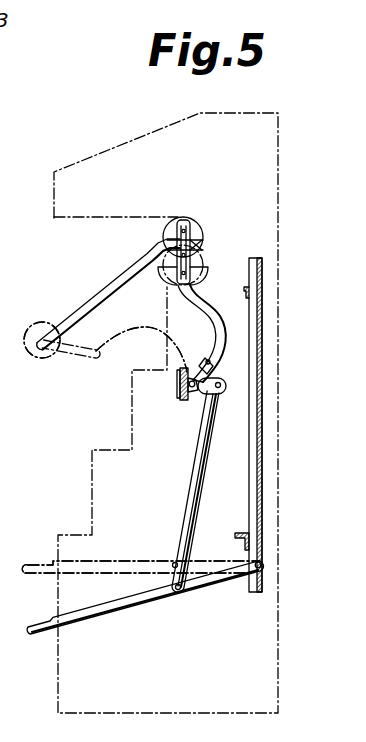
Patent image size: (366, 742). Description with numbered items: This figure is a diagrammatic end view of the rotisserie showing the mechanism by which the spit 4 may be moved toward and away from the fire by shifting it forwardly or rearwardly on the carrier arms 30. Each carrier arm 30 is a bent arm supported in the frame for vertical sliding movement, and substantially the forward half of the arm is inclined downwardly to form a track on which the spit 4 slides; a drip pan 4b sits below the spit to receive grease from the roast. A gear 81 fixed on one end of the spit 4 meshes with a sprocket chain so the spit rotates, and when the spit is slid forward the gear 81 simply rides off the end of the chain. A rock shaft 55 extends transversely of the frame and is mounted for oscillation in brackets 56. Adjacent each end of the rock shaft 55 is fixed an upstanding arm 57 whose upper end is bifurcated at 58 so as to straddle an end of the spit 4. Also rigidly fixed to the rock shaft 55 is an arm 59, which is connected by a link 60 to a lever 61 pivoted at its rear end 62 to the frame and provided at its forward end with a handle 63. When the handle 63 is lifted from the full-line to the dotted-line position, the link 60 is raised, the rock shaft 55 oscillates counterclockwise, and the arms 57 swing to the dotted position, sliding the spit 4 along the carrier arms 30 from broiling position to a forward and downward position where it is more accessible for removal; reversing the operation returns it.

The spit 4 is at (181, 219).
The drip pan 4b is at (166, 277).
The carrier arm 30 is at (100, 290).
The gear 81 is at (168, 236).
The rock shaft 55 is at (187, 395).
The bracket 56 is at (180, 387).
The upstanding arm 57 is at (220, 332).
The bifurcated upper end 58 is at (200, 243).
The arm 59 is at (220, 395).
The link 60 is at (202, 465).
The lever 61 is at (145, 598).
The rear end 62 is at (261, 565).
The handle 63 is at (30, 557).